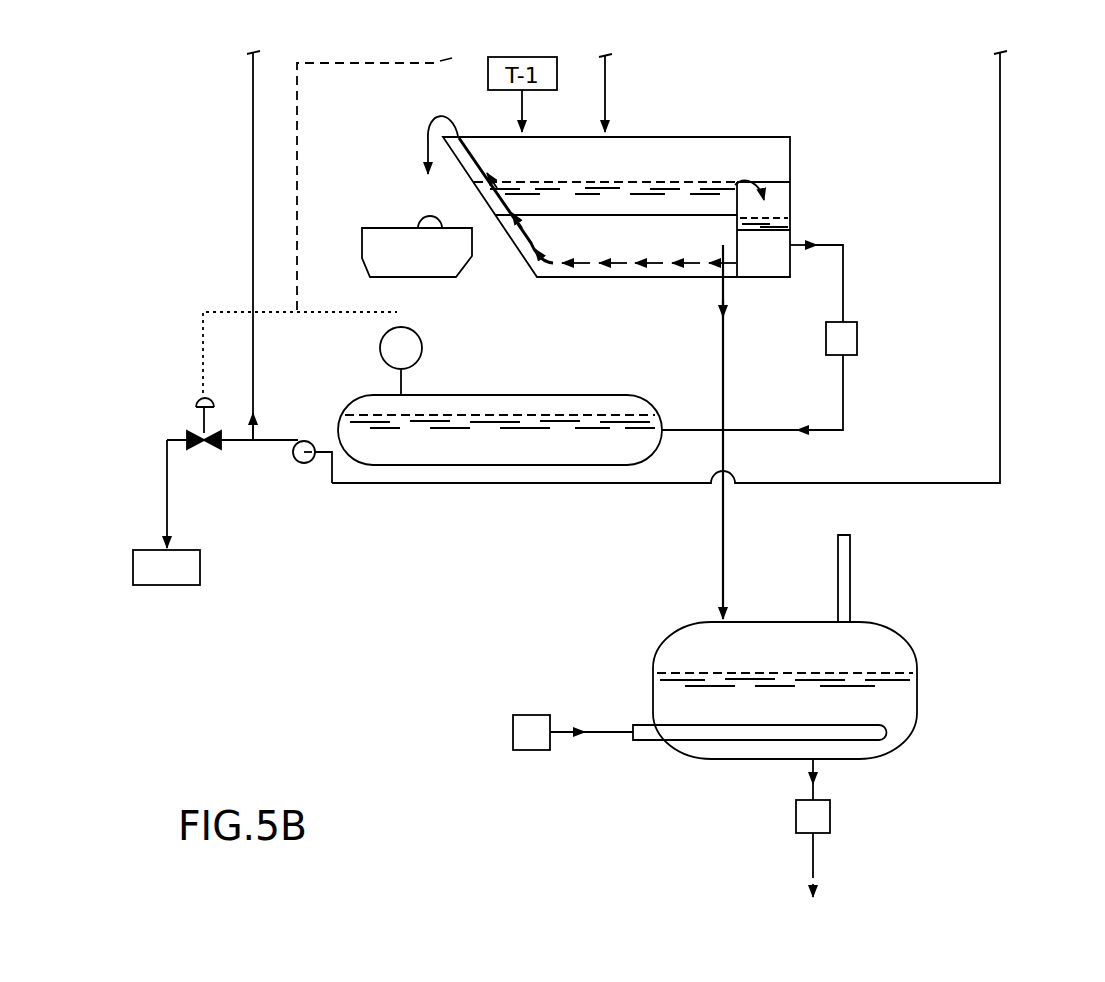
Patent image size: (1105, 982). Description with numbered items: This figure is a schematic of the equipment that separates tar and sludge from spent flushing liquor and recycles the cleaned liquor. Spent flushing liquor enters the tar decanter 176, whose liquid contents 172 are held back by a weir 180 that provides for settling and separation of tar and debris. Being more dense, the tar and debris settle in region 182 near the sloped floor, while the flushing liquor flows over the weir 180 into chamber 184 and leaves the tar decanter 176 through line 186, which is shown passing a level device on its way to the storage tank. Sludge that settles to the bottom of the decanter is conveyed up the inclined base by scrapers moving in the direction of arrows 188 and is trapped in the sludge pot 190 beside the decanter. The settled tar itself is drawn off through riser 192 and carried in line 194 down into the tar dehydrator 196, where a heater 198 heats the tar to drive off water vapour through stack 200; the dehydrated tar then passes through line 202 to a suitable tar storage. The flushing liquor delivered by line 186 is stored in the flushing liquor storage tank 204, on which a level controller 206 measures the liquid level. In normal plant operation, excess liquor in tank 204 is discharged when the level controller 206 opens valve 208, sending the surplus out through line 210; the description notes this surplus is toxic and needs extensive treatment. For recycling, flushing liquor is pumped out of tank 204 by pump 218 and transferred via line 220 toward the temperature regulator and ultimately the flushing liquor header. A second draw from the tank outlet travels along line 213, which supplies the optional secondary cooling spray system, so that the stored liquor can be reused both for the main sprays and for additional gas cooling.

The flushing liquor layer in tar decanter 172 is at (638, 190).
The tar decanter 176 is at (724, 126).
The weir 180 is at (737, 202).
The settling region 182 is at (533, 227).
The chamber 184 is at (770, 246).
The line 186 is at (843, 306).
The arrows 188 is at (466, 146).
The sludge pot 190 is at (363, 240).
The riser 192 is at (719, 248).
The line 194 is at (723, 541).
The tar dehydrator 196 is at (900, 643).
The heater 198 is at (643, 725).
The stack 200 is at (850, 555).
The line 202 is at (813, 792).
The flushing liquor storage tank 204 is at (542, 393).
The level controller 206 is at (422, 346).
The valve 208 is at (202, 432).
The line 210 is at (167, 505).
The line 213 is at (1000, 241).
The pump 218 is at (303, 440).
The line 220 is at (253, 207).